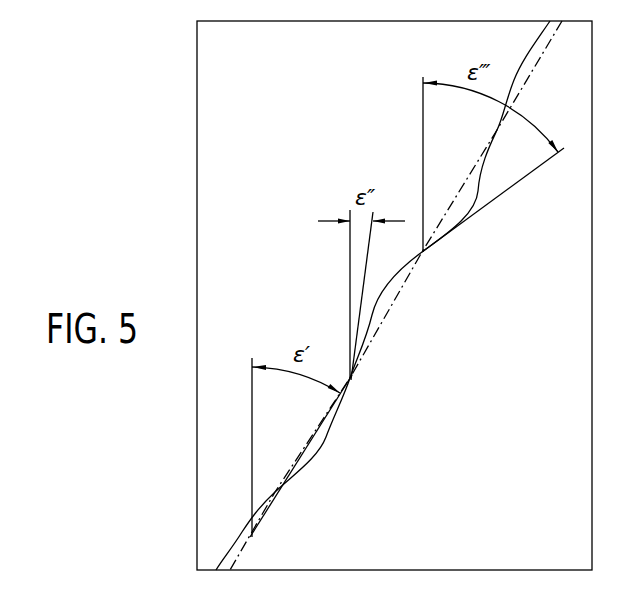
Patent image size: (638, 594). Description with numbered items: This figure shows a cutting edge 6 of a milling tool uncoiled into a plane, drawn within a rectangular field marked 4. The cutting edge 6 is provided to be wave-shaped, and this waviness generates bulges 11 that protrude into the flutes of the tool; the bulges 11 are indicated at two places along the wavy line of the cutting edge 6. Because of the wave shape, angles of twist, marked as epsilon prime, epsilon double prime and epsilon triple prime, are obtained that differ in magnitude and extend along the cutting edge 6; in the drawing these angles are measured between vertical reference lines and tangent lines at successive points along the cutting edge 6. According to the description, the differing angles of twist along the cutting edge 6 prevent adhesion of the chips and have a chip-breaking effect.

The plate 4 is at (503, 407).
The cutting edge 6 is at (375, 306).
The bulges 11 is at (485, 180).